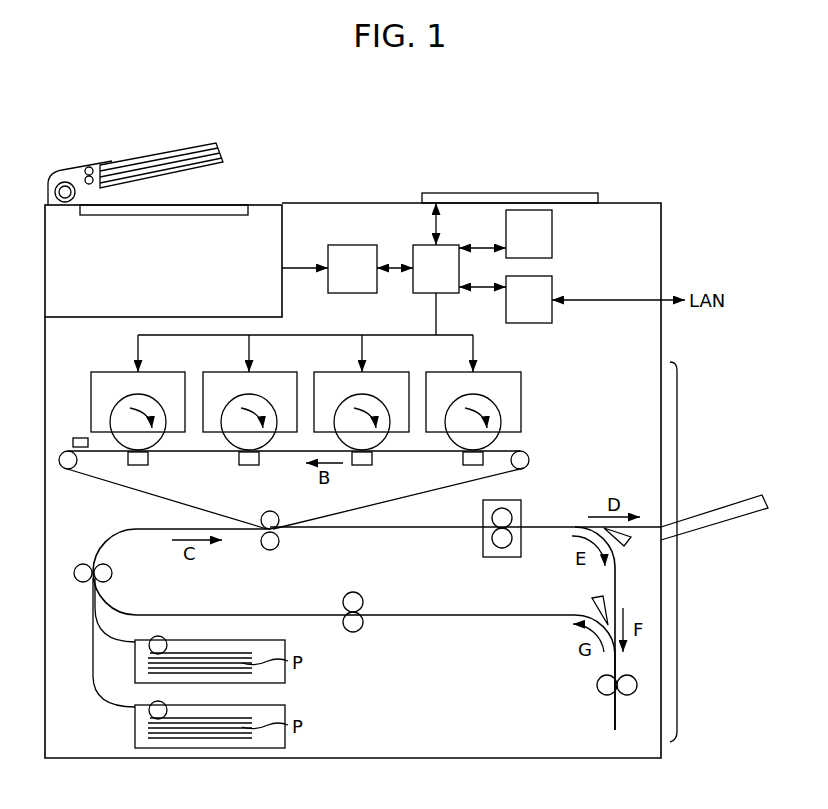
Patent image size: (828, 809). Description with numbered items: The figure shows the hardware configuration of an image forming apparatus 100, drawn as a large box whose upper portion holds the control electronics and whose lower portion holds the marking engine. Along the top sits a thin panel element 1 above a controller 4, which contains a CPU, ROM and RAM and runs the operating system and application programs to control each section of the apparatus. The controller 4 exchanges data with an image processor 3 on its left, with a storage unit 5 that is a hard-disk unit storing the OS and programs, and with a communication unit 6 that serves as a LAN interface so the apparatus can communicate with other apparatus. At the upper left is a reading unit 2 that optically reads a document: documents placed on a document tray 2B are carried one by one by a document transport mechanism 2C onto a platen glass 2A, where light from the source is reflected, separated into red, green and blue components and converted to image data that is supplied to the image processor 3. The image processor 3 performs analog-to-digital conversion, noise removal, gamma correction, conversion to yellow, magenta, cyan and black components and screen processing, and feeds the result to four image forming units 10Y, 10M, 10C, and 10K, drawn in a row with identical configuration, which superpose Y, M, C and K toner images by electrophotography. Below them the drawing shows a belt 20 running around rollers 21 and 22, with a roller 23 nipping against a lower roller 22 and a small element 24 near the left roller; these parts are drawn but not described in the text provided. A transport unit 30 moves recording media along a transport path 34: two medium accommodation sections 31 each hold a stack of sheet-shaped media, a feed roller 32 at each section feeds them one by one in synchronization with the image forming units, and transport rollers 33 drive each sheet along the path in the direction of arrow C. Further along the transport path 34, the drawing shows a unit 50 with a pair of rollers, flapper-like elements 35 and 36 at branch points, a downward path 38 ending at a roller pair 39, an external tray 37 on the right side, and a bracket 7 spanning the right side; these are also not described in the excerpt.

The image forming apparatus 100 is at (660, 183).
The operation panel 1 is at (525, 193).
The reading unit 2 is at (272, 212).
The platen glass 2A is at (211, 205).
The document tray 2B is at (224, 156).
The document transport mechanism 2C is at (98, 160).
The image processor 3 is at (348, 245).
The controller 4 is at (447, 245).
The storage unit 5 is at (554, 222).
The communication unit 6 is at (554, 287).
The sheet discharge section 7 is at (677, 583).
The image forming unit 10K is at (150, 372).
The image forming unit 10C is at (261, 372).
The image forming unit 10M is at (374, 372).
The image forming unit 10Y is at (486, 372).
The intermediate transfer belt 20 is at (138, 498).
The belt tension roller 21 is at (68, 470).
The belt drive roller / secondary transfer roller 22 is at (528, 456).
The secondary transfer roller 23 is at (277, 548).
The sensor 24 is at (80, 438).
The transport unit 30 is at (96, 544).
The medium accommodation section 31 is at (222, 640).
The feed roller 32 is at (163, 638).
The transport roller 33 is at (84, 582).
The transport path 34 is at (415, 527).
The switching flapper 35 is at (628, 548).
The switching flapper 36 is at (592, 600).
The output tray 37 is at (722, 498).
The discharge path 38 is at (614, 718).
The discharge roller pair 39 is at (630, 694).
The fixing unit 50 is at (521, 514).